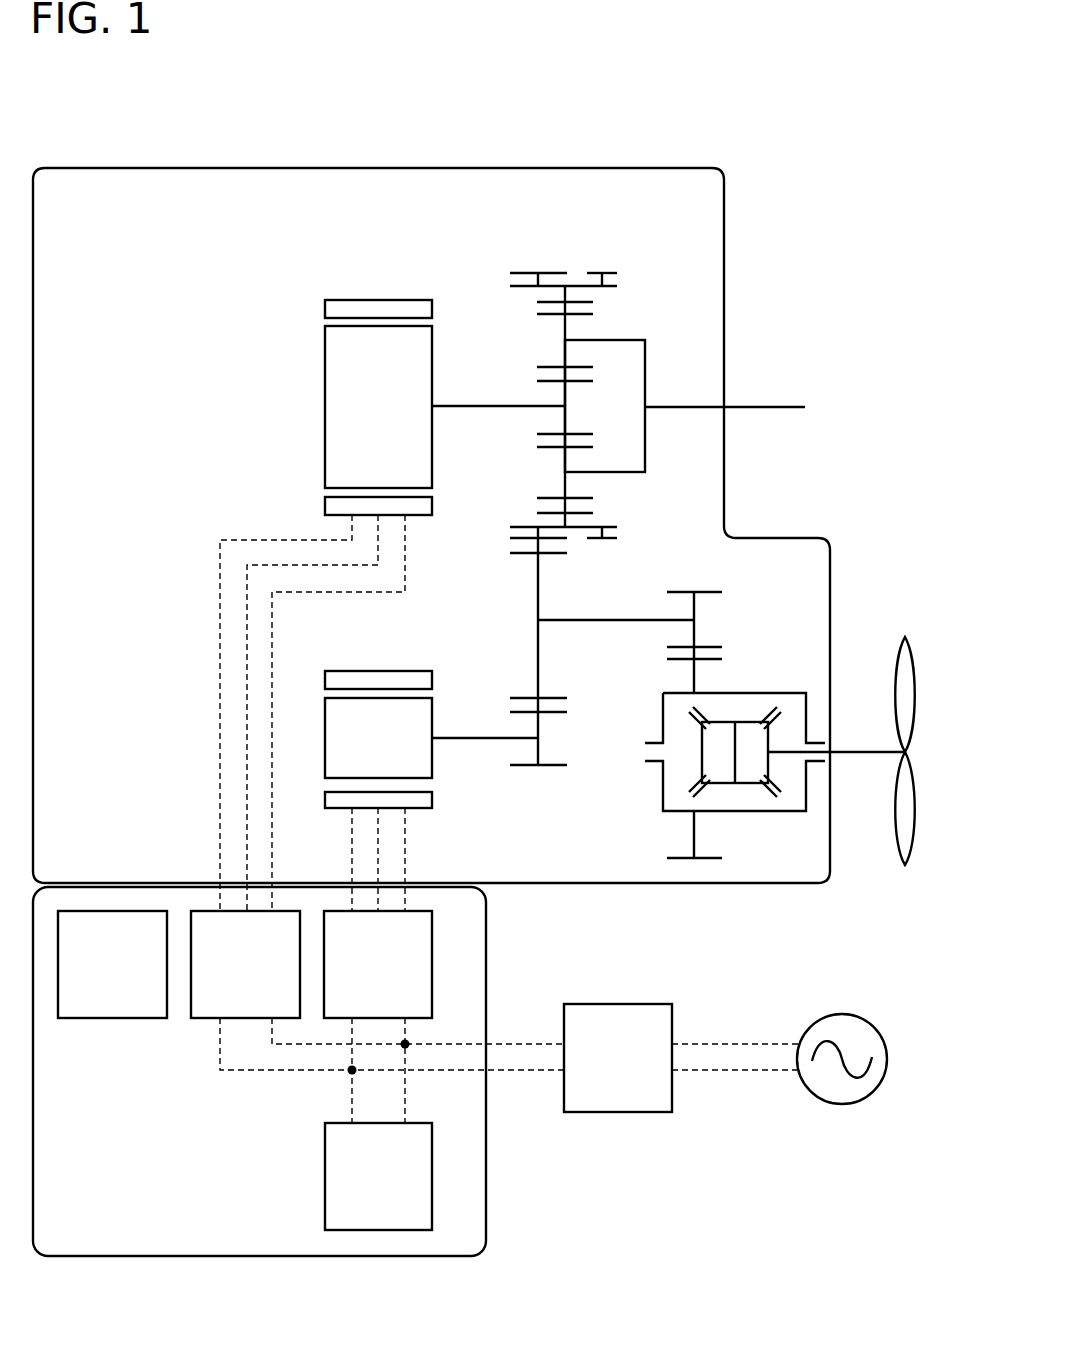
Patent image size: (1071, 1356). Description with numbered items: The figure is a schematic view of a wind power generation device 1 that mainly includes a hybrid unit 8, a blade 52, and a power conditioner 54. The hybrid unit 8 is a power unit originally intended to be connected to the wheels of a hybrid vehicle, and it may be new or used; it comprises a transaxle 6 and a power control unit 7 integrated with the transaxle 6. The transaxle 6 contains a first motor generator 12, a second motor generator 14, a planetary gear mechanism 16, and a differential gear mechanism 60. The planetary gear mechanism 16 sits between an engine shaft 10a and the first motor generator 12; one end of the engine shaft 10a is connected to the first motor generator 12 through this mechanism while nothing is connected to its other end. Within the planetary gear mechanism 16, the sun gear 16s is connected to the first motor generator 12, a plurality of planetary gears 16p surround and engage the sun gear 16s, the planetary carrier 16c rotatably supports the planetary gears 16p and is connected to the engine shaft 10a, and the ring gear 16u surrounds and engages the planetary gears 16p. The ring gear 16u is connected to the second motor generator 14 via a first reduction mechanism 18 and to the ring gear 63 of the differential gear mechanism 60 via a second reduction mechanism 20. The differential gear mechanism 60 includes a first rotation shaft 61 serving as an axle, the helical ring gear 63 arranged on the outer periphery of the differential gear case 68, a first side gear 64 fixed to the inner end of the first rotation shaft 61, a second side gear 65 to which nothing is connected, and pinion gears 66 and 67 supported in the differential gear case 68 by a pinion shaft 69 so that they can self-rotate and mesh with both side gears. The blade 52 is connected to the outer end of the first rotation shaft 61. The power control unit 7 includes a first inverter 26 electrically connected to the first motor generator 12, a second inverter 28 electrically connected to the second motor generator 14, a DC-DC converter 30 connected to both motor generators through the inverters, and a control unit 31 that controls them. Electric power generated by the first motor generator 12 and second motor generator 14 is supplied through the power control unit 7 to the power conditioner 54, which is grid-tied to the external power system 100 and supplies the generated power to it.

The wind power generation device 1 is at (891, 100).
The transaxle 6 is at (724, 200).
The power control unit 7 is at (486, 963).
The hybrid unit 8 is at (431, 699).
The engine shaft 10a is at (750, 406).
The first motor generator 12 is at (325, 340).
The second motor generator 14 is at (405, 671).
The planetary gear mechanism 16 is at (562, 364).
The ring gear 16u is at (510, 286).
The planetary gears 16p is at (565, 330).
The sun gear 16s is at (537, 381).
The planetary carrier 16c is at (645, 352).
The first reduction mechanism 18 is at (520, 672).
The second reduction mechanism 20 is at (722, 632).
The first inverter 26 is at (207, 1020).
The second inverter 28 is at (432, 939).
The DC-DC converter 30 is at (390, 1232).
The control unit 31 is at (112, 1020).
The blade 52 is at (905, 637).
The power conditioner 54 is at (618, 1114).
The differential gear mechanism 60 is at (764, 715).
The first rotation shaft 61 is at (852, 748).
The ring gear 63 is at (748, 722).
The first side gear 64 is at (768, 763).
The second side gear 65 is at (697, 757).
The pinion gear 66 is at (750, 787).
The pinion gear 67 is at (707, 661).
The differential gear case 68 is at (723, 813).
The pinion shaft 69 is at (733, 753).
The external power system 100 is at (842, 1104).